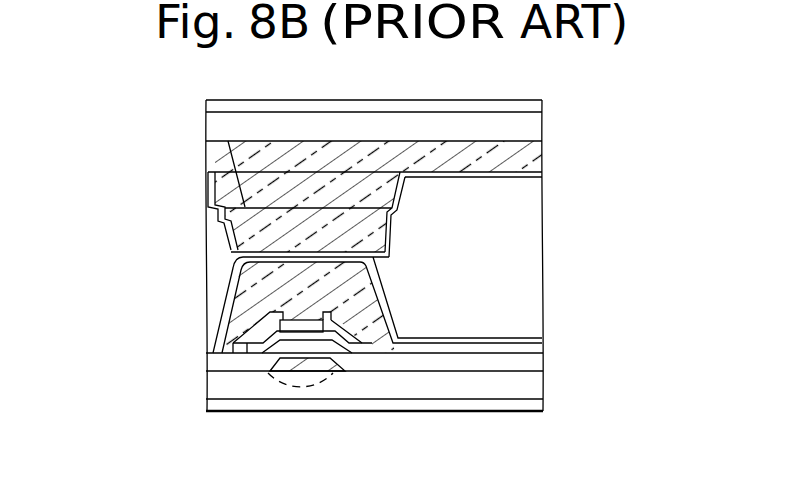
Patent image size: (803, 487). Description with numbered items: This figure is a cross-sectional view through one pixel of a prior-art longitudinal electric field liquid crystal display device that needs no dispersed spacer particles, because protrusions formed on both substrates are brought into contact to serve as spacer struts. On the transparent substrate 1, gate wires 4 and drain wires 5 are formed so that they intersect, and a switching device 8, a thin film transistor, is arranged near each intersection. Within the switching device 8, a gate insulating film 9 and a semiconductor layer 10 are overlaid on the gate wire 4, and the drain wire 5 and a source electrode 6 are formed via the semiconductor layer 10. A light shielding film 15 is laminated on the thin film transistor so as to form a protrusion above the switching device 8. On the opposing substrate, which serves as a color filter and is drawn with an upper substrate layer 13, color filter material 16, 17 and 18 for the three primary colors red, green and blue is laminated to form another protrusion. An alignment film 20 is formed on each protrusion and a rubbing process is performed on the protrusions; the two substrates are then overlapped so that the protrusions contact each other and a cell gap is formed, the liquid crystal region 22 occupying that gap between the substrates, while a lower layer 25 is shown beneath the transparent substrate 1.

The transparent substrate 1 is at (525, 383).
The gate wire 4 is at (327, 363).
The drain wire 5 is at (262, 362).
The source electrode 6 is at (373, 346).
The switching device 8 is at (278, 287).
The gate insulating film 9 is at (212, 360).
The semiconductor layer 10 is at (266, 334).
The counter substrate 13 is at (515, 130).
The light shielding film 15 is at (360, 325).
The color filter material 16 is at (230, 141).
The color filter material 17 is at (236, 188).
The color filter material 18 is at (240, 237).
The alignment film 20 is at (536, 177).
The liquid crystal layer 22 is at (518, 253).
The polarizer 25 is at (545, 409).